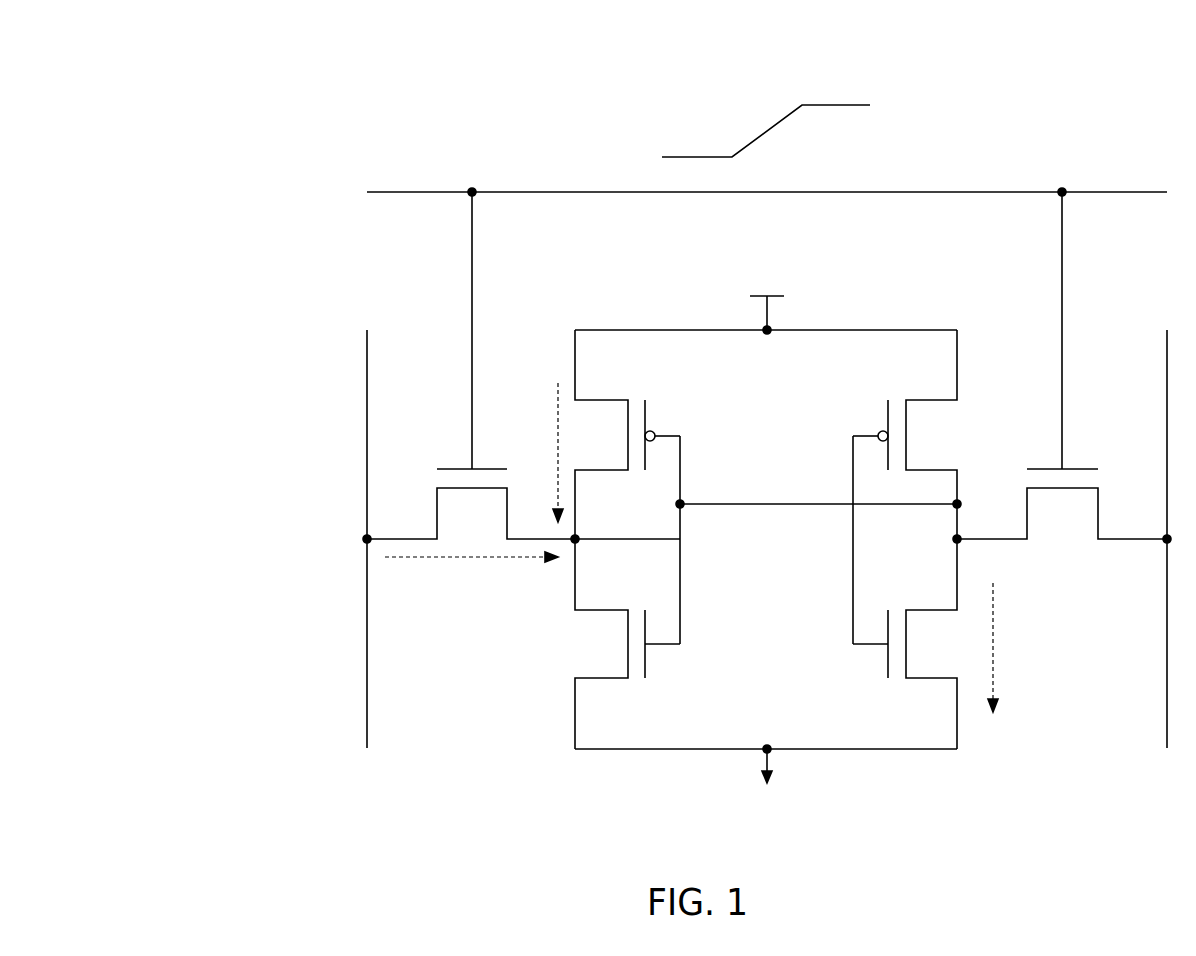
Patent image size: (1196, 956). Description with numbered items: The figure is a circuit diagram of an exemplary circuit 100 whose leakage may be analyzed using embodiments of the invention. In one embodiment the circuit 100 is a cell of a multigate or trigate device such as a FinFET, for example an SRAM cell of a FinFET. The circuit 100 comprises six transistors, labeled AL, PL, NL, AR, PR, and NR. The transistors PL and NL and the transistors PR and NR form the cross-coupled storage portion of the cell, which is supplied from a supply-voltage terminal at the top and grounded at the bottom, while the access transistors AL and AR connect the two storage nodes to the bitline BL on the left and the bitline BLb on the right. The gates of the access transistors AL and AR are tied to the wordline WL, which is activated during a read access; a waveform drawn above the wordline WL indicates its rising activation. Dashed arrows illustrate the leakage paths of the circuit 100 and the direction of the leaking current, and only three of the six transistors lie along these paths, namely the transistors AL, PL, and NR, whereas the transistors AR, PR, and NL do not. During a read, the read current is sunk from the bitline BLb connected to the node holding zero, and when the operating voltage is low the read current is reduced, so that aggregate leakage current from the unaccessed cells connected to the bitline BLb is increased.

The circuit 100 is at (116, 36).
The wordline WL is at (767, 150).
The bitline BL is at (385, 539).
The bitline BLb is at (1148, 539).
The transistor AL is at (471, 365).
The transistor AR is at (1062, 365).
The transistor PL is at (627, 434).
The transistor PR is at (905, 434).
The transistor NL is at (627, 644).
The transistor NR is at (905, 644).